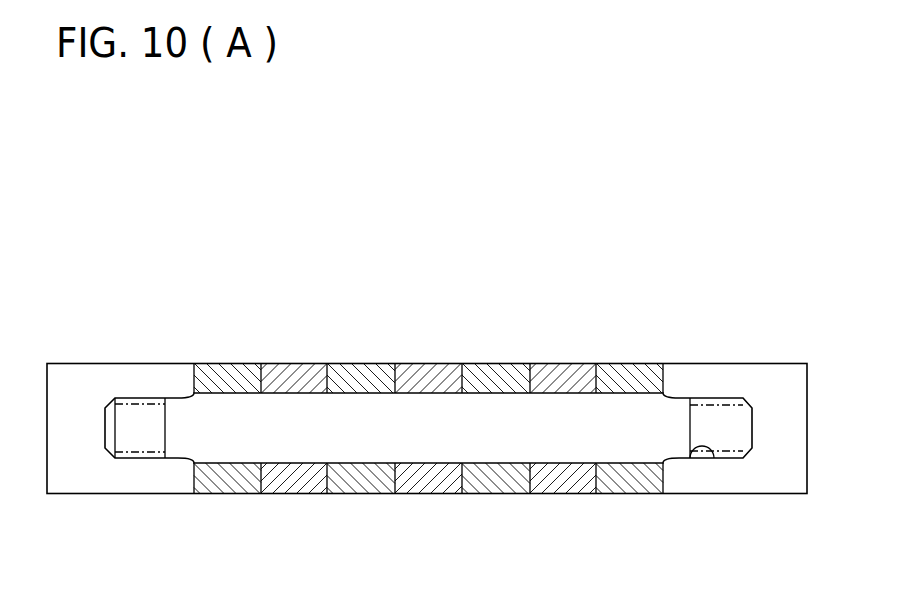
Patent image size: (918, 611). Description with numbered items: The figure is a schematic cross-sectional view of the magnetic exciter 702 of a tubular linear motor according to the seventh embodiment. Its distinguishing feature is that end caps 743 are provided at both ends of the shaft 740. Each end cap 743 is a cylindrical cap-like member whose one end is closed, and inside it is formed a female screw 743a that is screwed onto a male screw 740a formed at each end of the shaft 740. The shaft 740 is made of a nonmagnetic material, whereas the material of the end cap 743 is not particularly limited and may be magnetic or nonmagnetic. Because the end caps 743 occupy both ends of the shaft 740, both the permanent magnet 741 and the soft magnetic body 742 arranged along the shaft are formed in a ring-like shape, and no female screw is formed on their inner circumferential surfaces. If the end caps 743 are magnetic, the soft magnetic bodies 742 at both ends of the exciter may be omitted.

The magnetic exciter 702 is at (173, 145).
The shaft 740 is at (372, 412).
The male screw 740a is at (710, 398).
The permanent magnet 741 is at (230, 478).
The soft magnetic body 742 is at (285, 377).
The end cap 743 is at (120, 377).
The female screw 743a is at (677, 453).